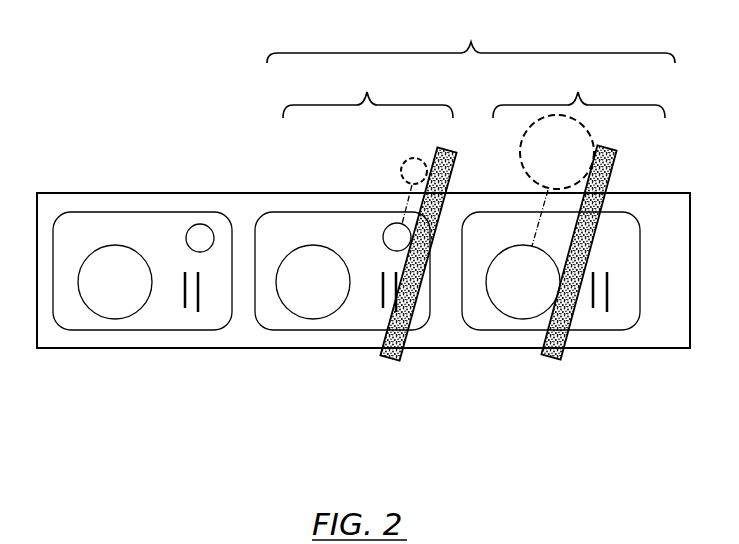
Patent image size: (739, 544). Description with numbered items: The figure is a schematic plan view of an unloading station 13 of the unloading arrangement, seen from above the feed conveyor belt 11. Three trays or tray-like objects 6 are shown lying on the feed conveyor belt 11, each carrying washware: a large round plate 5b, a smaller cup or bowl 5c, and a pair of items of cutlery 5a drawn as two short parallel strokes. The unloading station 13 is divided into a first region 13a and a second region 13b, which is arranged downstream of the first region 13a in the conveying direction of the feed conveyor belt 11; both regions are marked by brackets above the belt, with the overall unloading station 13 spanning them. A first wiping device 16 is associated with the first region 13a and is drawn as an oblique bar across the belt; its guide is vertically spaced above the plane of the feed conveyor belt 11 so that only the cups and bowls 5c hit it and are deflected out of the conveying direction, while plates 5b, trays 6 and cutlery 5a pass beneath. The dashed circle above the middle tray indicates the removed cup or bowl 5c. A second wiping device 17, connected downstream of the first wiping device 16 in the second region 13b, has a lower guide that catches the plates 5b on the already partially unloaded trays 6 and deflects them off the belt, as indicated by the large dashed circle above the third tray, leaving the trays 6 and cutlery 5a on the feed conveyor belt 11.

The feed conveyor belt 11 is at (93, 207).
The trays or tray-like objects 6 is at (70, 320).
The items of cutlery 5a is at (188, 302).
The plates 5b is at (115, 306).
The cups and bowls 5c is at (197, 223).
The unloading station 13 is at (484, 31).
The first region 13a is at (368, 143).
The second region 13b is at (579, 154).
The first wiping device 16 is at (407, 313).
The second wiping device 17 is at (568, 308).